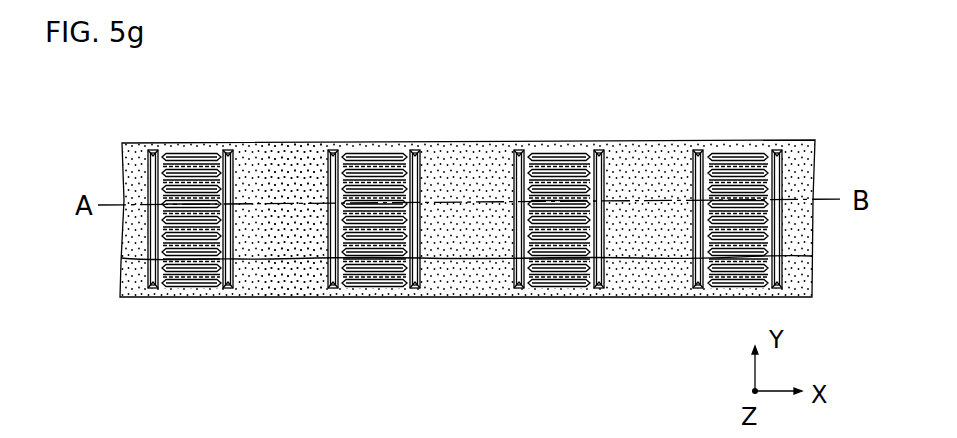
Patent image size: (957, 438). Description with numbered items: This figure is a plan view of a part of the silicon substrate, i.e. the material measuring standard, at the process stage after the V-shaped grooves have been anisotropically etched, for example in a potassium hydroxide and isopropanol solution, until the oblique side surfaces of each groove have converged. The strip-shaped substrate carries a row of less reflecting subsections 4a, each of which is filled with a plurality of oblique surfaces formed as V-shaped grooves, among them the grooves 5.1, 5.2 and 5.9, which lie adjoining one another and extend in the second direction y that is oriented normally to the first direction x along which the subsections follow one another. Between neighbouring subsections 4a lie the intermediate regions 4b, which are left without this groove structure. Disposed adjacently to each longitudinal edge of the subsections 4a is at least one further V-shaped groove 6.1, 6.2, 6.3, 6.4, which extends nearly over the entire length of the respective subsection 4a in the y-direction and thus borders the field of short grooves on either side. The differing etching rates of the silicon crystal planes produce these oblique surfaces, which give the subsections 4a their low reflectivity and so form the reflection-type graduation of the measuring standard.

The subsection having low reflectivity 4a is at (202, 297).
The carrier substrate intermediate section 4b is at (297, 243).
The V-shaped groove 5.1 is at (182, 153).
The V-shaped groove 5.2 is at (152, 168).
The V-shaped groove 5.9 is at (168, 292).
The further V-shaped groove 6.1 is at (123, 256).
The further V-shaped groove 6.2 is at (228, 143).
The further V-shaped groove 6.3 is at (325, 148).
The further V-shaped groove 6.4 is at (423, 148).